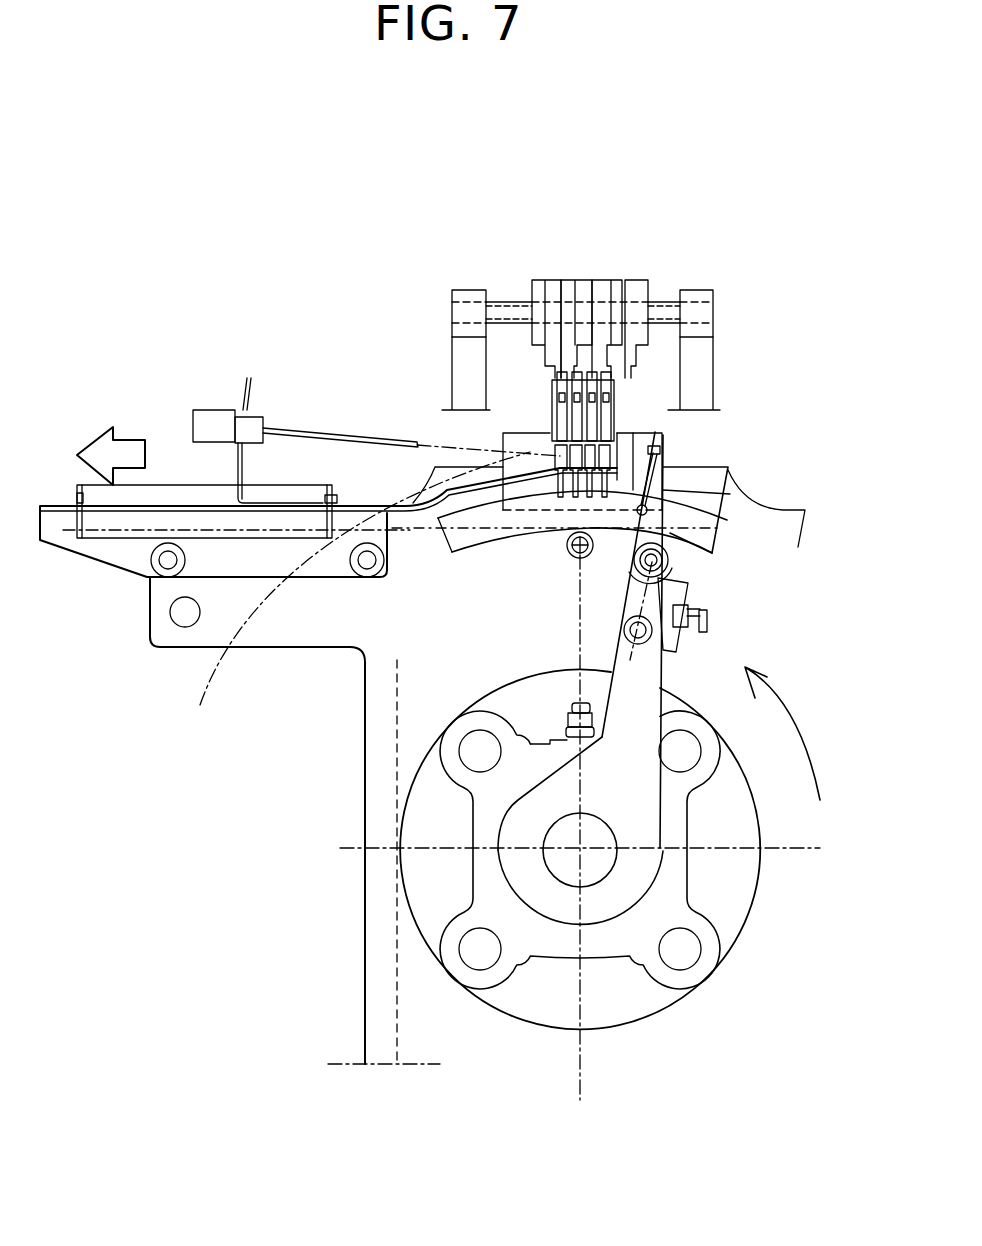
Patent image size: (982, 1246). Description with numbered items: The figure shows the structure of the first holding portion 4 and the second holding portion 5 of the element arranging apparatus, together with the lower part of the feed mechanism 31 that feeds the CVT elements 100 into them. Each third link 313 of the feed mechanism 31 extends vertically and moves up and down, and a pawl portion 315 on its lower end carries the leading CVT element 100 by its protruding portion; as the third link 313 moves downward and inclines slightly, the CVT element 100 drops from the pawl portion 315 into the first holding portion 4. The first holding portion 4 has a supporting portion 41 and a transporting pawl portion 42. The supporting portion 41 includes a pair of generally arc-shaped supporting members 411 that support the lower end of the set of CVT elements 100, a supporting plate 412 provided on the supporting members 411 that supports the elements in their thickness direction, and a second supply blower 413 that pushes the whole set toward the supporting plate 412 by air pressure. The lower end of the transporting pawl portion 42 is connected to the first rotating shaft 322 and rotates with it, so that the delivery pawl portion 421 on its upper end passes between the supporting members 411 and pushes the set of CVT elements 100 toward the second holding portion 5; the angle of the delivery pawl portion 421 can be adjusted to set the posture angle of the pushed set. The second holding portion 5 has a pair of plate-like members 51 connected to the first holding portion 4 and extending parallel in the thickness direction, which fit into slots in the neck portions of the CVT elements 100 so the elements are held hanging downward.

The second holding portion 5 is at (130, 507).
The plate-like members 51 is at (90, 512).
The second supply blower 413 is at (213, 417).
The feed mechanism 31 is at (545, 290).
The third link 313 is at (580, 283).
The pawl portion 315 is at (553, 386).
The first holding portion 4 is at (728, 468).
The supporting plate 412 is at (661, 446).
The supporting members 411 is at (463, 537).
The delivery pawl portion 421 is at (730, 495).
The supporting portion 41 is at (693, 588).
The transporting pawl portion 42 is at (642, 673).
The CVT elements 100 is at (558, 500).
The first rotating shaft 322 is at (580, 857).